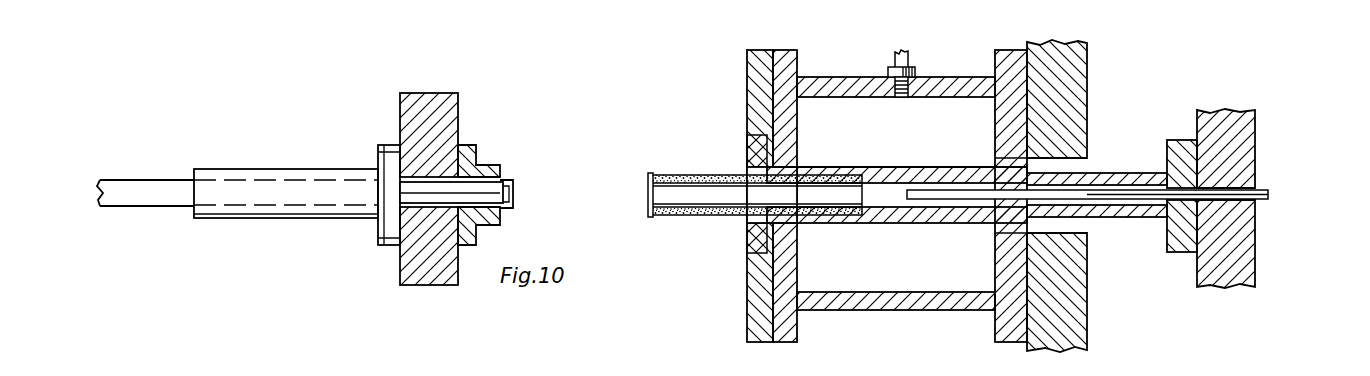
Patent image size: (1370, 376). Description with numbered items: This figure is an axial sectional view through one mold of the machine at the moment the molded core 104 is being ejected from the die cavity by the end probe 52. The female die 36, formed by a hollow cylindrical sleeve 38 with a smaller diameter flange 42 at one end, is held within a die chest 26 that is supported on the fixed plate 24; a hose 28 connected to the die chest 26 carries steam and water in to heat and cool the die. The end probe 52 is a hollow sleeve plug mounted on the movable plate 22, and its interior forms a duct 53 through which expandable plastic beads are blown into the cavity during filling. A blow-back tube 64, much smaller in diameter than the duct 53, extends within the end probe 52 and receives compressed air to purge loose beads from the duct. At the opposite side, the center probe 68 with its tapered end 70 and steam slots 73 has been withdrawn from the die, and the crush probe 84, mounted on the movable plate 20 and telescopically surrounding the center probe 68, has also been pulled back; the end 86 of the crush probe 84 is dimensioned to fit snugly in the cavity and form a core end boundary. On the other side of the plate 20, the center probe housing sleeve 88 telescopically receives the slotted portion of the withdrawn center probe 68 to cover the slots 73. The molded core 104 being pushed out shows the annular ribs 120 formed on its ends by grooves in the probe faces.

The movable plate 20 is at (415, 250).
The movable plate 22 is at (1237, 130).
The fixed plate 24 is at (1058, 328).
The die chest 26 is at (898, 320).
The hose 28 is at (905, 58).
The female die 36 is at (923, 167).
The hollow cylindrical sleeve 38 is at (903, 149).
The smaller diameter flange 42 is at (1022, 158).
The end probe 52 is at (1132, 182).
The duct 53 is at (900, 198).
The blow-back tube 64 is at (1162, 193).
The center probe 68 is at (158, 197).
The tapered end 70 is at (514, 191).
The slots 73 is at (427, 192).
The crush probe 84 is at (492, 168).
The end of crush probe 86 is at (515, 206).
The center probe housing sleeve 88 is at (243, 173).
The molded core 104 is at (713, 215).
The annular rib 120 is at (647, 183).